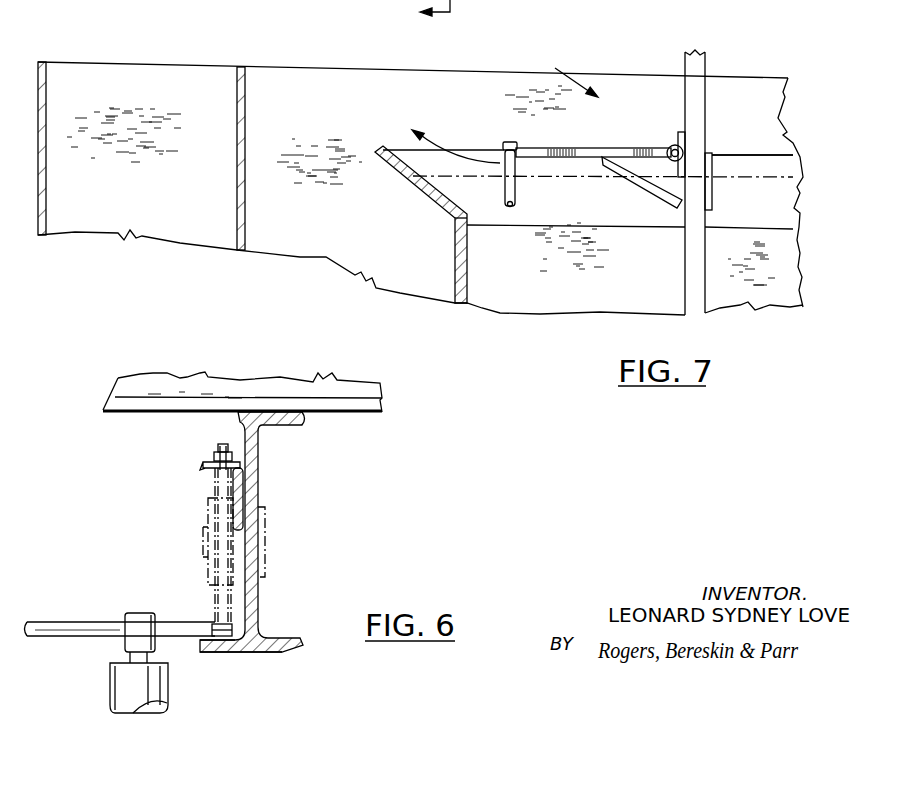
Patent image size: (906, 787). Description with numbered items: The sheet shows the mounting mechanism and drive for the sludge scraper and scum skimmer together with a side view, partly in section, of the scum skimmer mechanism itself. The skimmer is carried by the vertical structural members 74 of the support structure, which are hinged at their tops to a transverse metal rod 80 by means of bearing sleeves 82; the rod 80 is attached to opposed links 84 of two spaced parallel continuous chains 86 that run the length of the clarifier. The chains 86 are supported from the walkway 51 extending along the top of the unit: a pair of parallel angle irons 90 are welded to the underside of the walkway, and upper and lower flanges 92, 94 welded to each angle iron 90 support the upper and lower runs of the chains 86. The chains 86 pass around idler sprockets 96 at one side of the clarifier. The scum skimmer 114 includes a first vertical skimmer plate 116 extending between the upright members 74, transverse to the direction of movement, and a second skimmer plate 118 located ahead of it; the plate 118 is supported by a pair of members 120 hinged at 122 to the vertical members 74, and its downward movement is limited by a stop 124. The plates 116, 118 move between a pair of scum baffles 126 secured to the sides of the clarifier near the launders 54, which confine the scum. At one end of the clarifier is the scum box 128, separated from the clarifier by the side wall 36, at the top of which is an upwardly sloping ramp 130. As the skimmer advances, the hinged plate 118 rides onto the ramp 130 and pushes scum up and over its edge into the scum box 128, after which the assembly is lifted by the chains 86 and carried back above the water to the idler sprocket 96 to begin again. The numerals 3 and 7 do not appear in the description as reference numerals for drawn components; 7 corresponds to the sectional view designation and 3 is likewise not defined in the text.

In FIG. 7, the hull 3 is at (487, 282).
In FIG. 7, the section line of FIG. 7 is at (421, 19).
In FIG. 7, the side wall 36 is at (455, 251).
In FIG. 6, the walkway 51 is at (137, 379).
In FIG. 7, the launder 54 is at (147, 100).
In FIG. 7, the vertical structural member 74 is at (708, 63).
In FIG. 6, the vertical structural member 74 is at (110, 678).
In FIG. 6, the transverse metal rod 80 is at (57, 622).
In FIG. 6, the bearing sleeve 82 is at (137, 612).
In FIG. 6, the link 84 is at (214, 628).
In FIG. 6, the continuous chain 86 is at (214, 449).
In FIG. 6, the angle iron 90 is at (258, 463).
In FIG. 6, the upper flange 92 is at (205, 468).
In FIG. 6, the lower flange 94 is at (234, 652).
In FIG. 6, the idler sprocket 96 is at (210, 505).
In FIG. 7, the scum skimmer 114 is at (558, 71).
In FIG. 7, the first vertical skimmer plate 116 is at (713, 163).
In FIG. 7, the second skimmer plate 118 is at (497, 163).
In FIG. 7, the member 120 is at (556, 148).
In FIG. 7, the hinge 122 is at (668, 150).
In FIG. 7, the stop 124 is at (647, 187).
In FIG. 7, the scum baffle 126 is at (780, 168).
In FIG. 7, the scum box 128 is at (285, 107).
In FIG. 7, the upwardly sloping ramp 130 is at (413, 188).